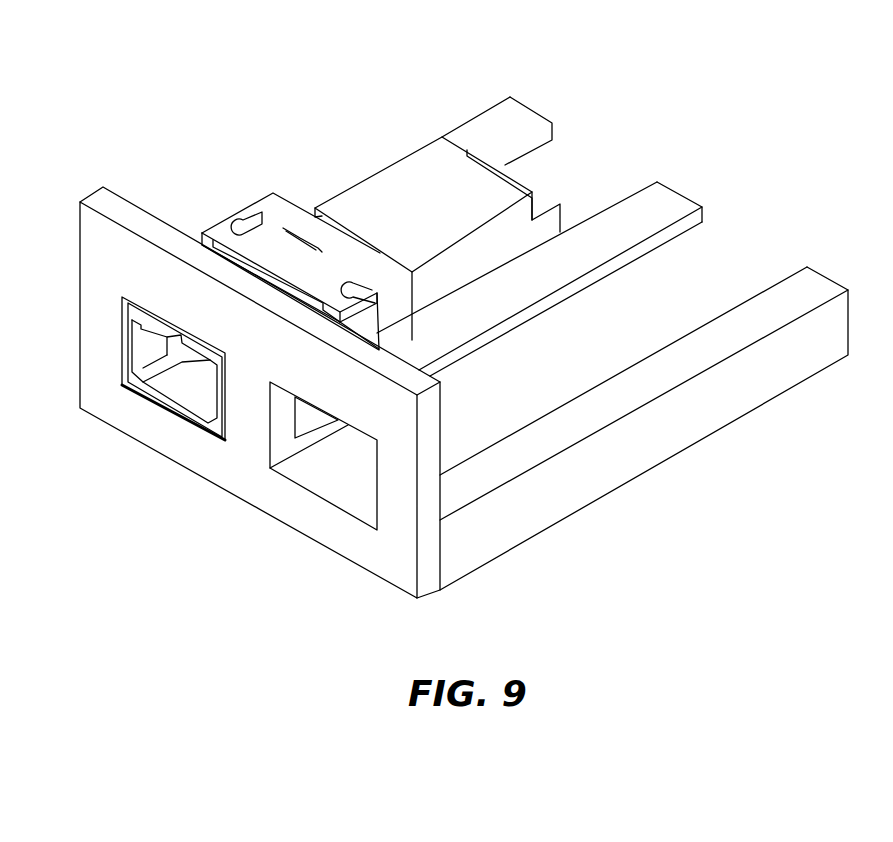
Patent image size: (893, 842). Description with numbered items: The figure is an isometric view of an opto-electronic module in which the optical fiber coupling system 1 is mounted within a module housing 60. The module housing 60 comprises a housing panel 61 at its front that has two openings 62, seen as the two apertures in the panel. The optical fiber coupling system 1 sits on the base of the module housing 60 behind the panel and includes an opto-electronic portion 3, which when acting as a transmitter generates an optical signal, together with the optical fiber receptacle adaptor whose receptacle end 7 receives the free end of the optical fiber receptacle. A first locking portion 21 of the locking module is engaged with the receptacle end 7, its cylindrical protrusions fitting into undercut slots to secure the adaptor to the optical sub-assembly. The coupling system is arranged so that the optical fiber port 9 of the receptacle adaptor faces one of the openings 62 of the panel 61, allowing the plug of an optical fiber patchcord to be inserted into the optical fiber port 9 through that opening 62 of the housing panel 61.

The optical fiber coupling system 1 is at (302, 190).
The opto-electronic portion 3 is at (392, 178).
The receptacle end 7 is at (223, 238).
The first locking portion 21 is at (260, 207).
The module housing 60 is at (697, 170).
The housing panel 61 is at (104, 262).
The opening 62 is at (333, 472).
The optical fiber port 9 is at (185, 382).